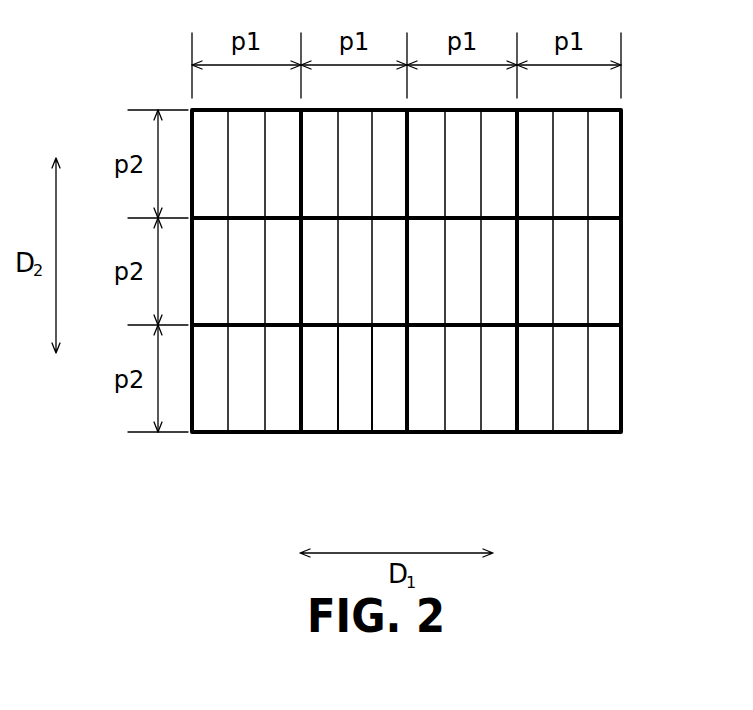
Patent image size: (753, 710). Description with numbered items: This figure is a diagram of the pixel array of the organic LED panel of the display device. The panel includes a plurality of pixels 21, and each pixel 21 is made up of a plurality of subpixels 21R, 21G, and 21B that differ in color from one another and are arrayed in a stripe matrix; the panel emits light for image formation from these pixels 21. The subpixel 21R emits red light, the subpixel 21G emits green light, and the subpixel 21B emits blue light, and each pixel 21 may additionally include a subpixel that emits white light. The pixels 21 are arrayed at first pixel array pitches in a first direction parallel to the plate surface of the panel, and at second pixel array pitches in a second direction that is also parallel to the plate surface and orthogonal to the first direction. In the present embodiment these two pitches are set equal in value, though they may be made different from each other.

The pixel 21 is at (227, 230).
The subpixel 21R is at (317, 420).
The subpixel 21G is at (353, 420).
The subpixel 21B is at (392, 420).